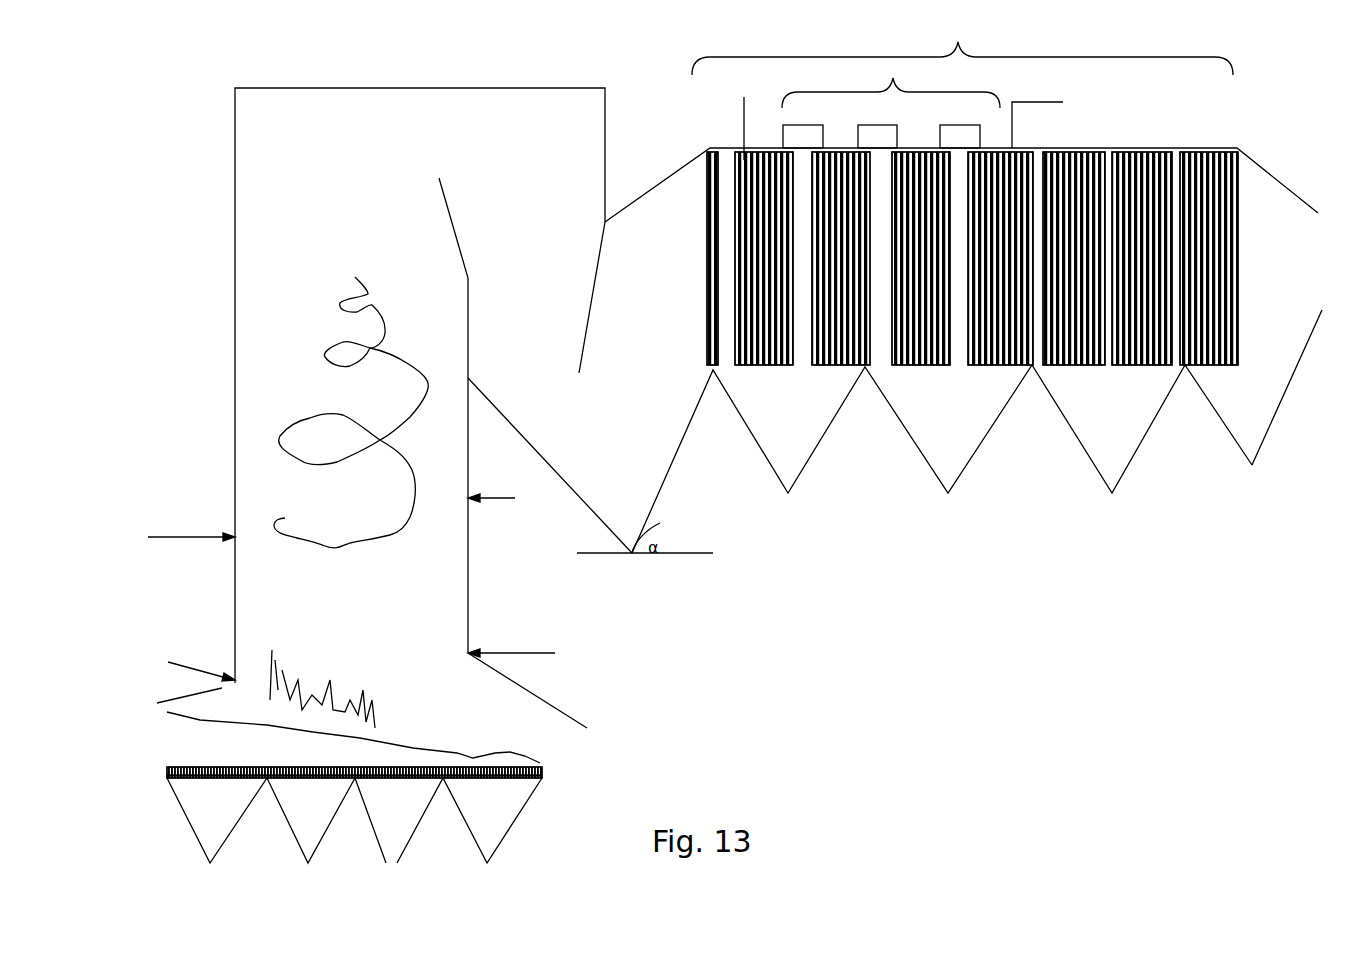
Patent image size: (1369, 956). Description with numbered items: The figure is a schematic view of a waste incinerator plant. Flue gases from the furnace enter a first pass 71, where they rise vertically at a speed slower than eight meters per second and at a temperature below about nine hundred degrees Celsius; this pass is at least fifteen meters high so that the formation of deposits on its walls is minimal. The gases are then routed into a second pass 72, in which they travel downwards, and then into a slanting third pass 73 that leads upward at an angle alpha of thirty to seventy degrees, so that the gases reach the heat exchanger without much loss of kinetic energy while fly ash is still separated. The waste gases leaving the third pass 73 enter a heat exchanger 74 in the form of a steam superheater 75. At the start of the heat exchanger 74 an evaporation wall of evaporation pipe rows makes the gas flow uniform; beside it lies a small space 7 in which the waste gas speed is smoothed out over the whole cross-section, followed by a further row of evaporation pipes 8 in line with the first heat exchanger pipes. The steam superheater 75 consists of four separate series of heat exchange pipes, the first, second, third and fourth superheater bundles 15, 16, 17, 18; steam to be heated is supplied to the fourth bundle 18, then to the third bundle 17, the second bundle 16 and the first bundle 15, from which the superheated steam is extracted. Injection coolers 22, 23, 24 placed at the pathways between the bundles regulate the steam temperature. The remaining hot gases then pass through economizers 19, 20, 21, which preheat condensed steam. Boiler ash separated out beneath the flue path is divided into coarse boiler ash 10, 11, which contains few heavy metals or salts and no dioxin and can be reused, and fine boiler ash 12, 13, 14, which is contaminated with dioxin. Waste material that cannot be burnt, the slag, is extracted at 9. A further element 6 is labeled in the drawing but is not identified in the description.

The gas flow path 6 is at (942, 459).
The small space 7 is at (704, 268).
The row of evaporation pipes 8 is at (738, 128).
The slag extraction 9 is at (553, 768).
The coarse boiler ash separation 10 is at (632, 553).
The coarse boiler ash separation 11 is at (788, 493).
The fine boiler ash separation 12 is at (948, 493).
The fine boiler ash separation 13 is at (1112, 493).
The fine boiler ash separation 14 is at (1252, 465).
The heat exchange pipes 15 is at (764, 272).
The heat exchange pipes 16 is at (841, 272).
The heat exchange pipes 17 is at (921, 272).
The heat exchange pipes 18 is at (1000, 272).
The economizer 19 is at (1074, 272).
The economizer 20 is at (1142, 272).
The economizer 21 is at (1209, 271).
The injection cooler 22 is at (803, 103).
The injection cooler 23 is at (877, 103).
The injection cooler 24 is at (960, 103).
The first pass 71 is at (420, 385).
The second pass 72 is at (467, 415).
The third pass 73 is at (602, 297).
The heat exchanger 74 is at (962, 51).
The steam superheater 75 is at (891, 85).